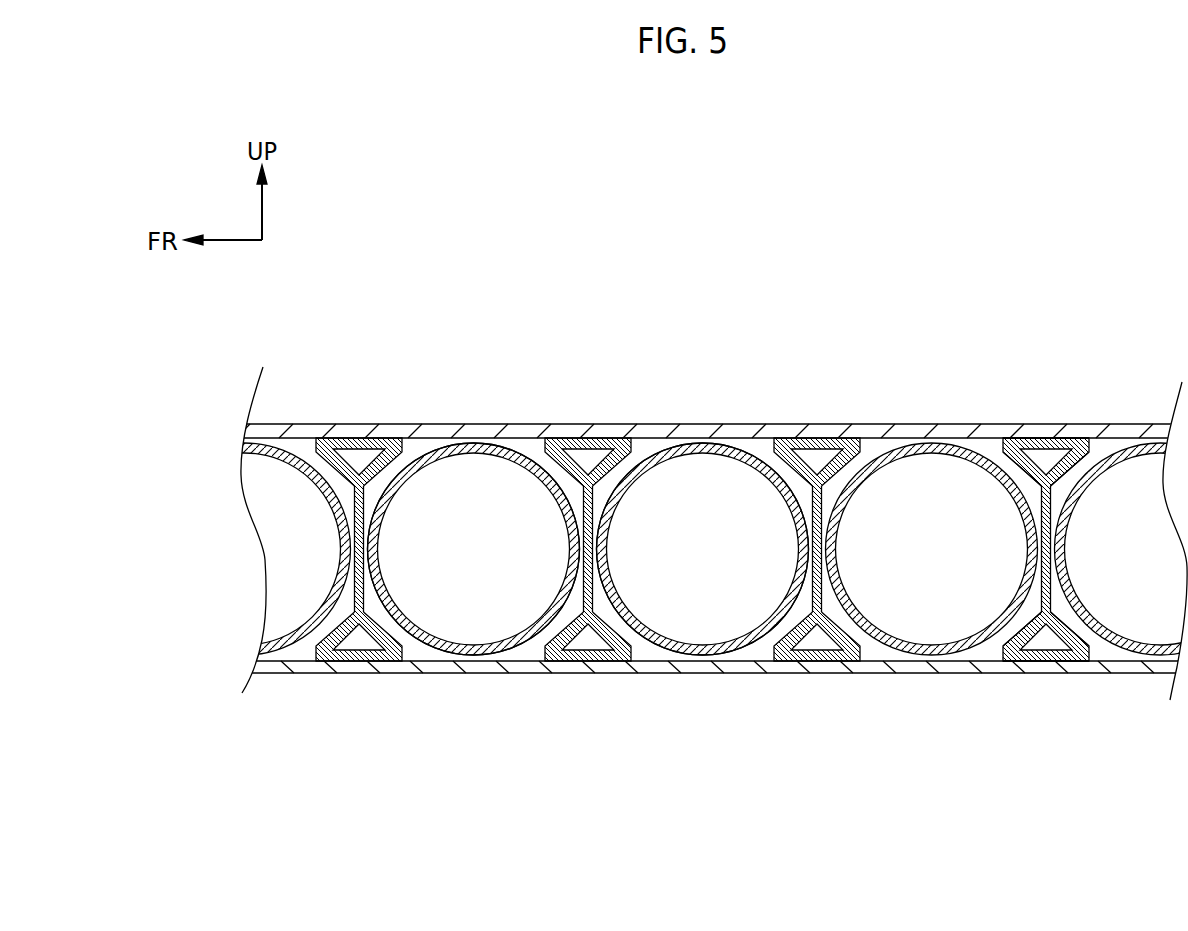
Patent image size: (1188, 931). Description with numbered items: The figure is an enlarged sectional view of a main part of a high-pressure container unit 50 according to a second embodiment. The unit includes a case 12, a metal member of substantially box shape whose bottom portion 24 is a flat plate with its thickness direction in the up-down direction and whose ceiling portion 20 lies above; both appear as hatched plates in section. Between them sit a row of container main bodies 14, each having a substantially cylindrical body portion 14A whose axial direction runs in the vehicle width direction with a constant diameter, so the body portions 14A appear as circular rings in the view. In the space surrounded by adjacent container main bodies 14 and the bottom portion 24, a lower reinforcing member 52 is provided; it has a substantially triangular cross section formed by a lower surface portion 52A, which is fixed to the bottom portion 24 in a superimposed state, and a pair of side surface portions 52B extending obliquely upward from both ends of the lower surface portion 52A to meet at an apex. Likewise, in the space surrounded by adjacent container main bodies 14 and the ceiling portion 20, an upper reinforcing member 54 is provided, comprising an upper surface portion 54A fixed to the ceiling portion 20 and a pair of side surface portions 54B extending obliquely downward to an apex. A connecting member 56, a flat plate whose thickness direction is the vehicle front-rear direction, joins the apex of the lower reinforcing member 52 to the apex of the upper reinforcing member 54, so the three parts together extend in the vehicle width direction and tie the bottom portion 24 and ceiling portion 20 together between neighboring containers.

The high-pressure container unit 50 is at (1048, 332).
The case 12 is at (709, 537).
The ceiling portion 20 is at (883, 424).
The bottom portion 24 is at (710, 675).
The container main body 14 is at (657, 452).
The body portion 14A is at (438, 449).
The upper reinforcing member 54 is at (347, 438).
The upper surface portion 54A is at (1038, 440).
The side surface portions 54B is at (1009, 468).
The lower reinforcing member 52 is at (348, 661).
The lower surface portion 52A is at (1062, 661).
The side surface portions 52B is at (1026, 627).
The connecting member 56 is at (343, 598).